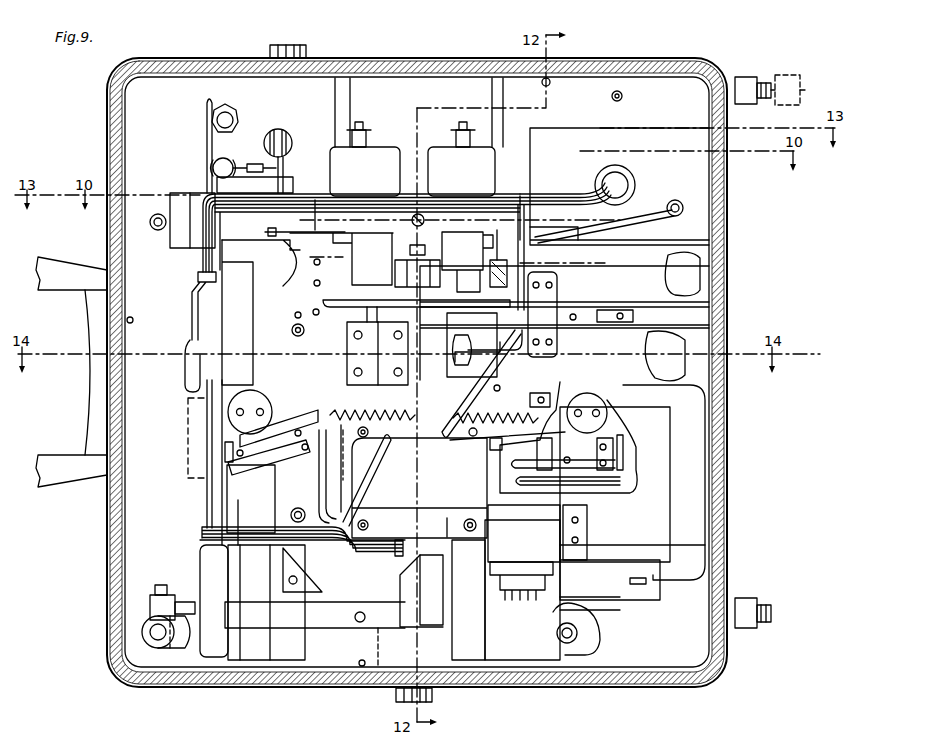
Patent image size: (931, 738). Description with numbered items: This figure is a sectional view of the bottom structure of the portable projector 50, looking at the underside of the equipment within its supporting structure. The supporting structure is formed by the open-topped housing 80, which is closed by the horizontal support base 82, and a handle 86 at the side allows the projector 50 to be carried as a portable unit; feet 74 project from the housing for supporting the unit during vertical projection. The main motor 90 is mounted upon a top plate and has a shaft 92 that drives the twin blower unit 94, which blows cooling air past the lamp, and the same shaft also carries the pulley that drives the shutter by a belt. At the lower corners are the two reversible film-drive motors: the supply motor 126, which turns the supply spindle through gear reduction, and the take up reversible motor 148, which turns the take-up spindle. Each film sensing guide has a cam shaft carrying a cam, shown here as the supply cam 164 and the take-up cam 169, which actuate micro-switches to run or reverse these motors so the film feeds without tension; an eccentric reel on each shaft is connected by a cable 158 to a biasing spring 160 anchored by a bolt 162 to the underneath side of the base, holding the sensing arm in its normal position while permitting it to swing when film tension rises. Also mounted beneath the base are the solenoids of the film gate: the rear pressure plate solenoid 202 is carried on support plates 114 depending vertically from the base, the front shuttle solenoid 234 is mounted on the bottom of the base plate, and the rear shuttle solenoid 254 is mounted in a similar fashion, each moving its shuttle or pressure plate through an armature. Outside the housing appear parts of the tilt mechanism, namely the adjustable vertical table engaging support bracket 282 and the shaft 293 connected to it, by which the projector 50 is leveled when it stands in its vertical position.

The projector 50 is at (97, 522).
The feet 74 is at (748, 610).
The housing 80 is at (112, 617).
The horizontal support base 82 is at (135, 560).
The handle 86 is at (50, 487).
The main motor 90 is at (662, 492).
The shaft 92 is at (612, 326).
The twin blower unit 94 is at (713, 278).
The support plates 114 is at (392, 296).
The reversible motor 126 is at (218, 652).
The take up reversible motor 148 is at (508, 655).
The cable 158 is at (547, 440).
The biasing spring 160 is at (555, 428).
The bolt 162 is at (440, 443).
The cam 164 is at (275, 406).
The cam 169 is at (563, 412).
The solenoid 202 is at (480, 282).
The front solenoid 234 is at (487, 168).
The rear solenoid 254 is at (380, 150).
The vertical table engaging support bracket 282 is at (757, 84).
The shaft 293 is at (738, 76).